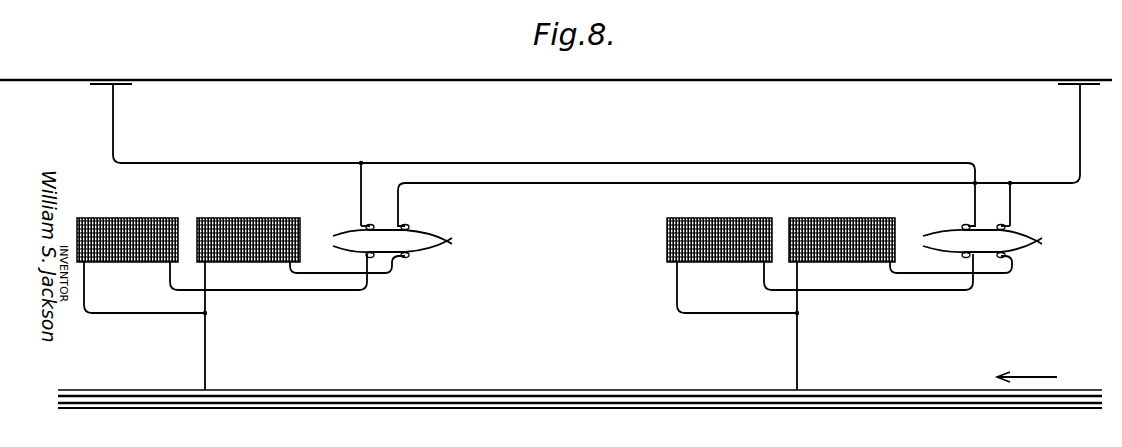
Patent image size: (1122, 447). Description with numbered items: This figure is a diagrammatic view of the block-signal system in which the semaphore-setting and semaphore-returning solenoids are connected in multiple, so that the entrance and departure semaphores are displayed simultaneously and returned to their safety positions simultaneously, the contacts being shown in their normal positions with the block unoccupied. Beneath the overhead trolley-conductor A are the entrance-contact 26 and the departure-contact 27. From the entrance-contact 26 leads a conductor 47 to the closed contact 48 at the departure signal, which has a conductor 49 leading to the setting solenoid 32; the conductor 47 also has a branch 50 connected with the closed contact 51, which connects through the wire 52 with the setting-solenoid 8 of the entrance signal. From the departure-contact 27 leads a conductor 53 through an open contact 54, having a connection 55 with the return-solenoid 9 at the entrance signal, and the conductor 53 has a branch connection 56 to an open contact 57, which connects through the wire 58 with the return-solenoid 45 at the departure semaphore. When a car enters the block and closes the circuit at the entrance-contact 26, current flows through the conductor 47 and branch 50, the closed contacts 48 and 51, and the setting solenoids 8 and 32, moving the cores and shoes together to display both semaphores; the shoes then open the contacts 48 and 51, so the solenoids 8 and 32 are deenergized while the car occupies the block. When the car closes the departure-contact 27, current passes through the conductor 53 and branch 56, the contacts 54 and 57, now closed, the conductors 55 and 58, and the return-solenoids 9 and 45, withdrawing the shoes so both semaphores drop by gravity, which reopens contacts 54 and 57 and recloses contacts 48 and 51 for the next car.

The overhead trolley-conductor A is at (893, 80).
The entrance-contact 26 is at (1100, 84).
The departure-contact 27 is at (100, 86).
The conductor 47 is at (1082, 140).
The conductor 53 is at (114, 132).
The branch connection 56 is at (363, 191).
The branch 50 is at (1012, 207).
The return-solenoid 45 is at (136, 218).
The setting solenoid 32 is at (276, 218).
The return-solenoid 9 is at (730, 218).
The setting-solenoid 8 is at (858, 218).
The open contact 57 is at (352, 234).
The closed contact 48 is at (427, 236).
The conductor 49 is at (384, 278).
The wire 58 is at (282, 292).
The open contact 54 is at (938, 230).
The closed contact 51 is at (1020, 246).
The wire 52 is at (921, 272).
The connection 55 is at (878, 290).